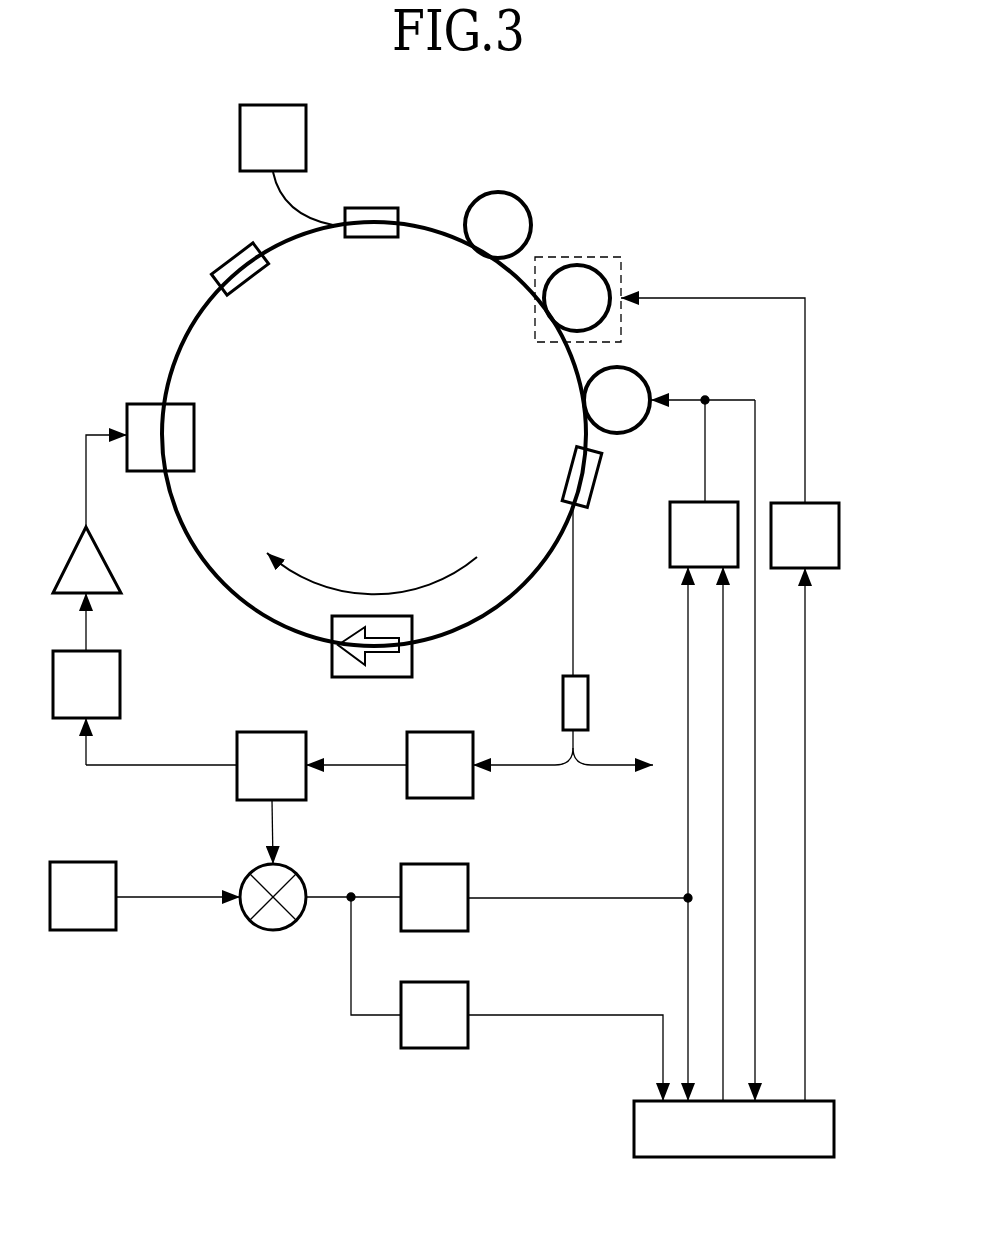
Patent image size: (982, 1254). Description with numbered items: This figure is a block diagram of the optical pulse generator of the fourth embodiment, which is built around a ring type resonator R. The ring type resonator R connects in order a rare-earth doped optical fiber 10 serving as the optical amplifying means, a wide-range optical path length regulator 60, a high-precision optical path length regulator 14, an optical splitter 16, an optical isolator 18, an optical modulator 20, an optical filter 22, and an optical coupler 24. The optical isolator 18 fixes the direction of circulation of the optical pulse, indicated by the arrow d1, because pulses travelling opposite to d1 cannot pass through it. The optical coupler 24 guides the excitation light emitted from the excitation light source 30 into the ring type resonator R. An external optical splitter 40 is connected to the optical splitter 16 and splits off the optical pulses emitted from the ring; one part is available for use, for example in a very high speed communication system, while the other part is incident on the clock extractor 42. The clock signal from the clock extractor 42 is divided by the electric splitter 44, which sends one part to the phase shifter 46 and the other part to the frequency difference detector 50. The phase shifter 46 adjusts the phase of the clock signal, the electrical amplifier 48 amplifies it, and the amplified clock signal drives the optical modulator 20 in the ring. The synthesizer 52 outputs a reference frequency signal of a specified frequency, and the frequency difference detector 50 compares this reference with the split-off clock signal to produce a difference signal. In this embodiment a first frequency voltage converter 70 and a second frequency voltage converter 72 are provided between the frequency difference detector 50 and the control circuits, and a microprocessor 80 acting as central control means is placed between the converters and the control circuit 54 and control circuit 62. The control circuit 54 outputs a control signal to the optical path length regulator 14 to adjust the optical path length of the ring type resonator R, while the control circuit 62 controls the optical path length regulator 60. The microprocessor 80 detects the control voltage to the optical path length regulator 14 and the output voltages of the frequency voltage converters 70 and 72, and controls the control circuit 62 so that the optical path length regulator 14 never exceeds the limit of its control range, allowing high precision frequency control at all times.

The ring type resonator R is at (190, 320).
The direction of circulation d1 is at (372, 576).
The rare-earth doped optical fiber 10 is at (502, 192).
The optical path length regulator 14 is at (647, 417).
The optical splitter 16 is at (565, 482).
The optical isolator 18 is at (332, 660).
The optical modulator 20 is at (194, 440).
The optical filter 22 is at (255, 280).
The optical coupler 24 is at (365, 207).
The excitation light source 30 is at (307, 115).
The optical splitter 40 is at (588, 695).
The clock extractor 42 is at (459, 732).
The electric splitter 44 is at (252, 732).
The phase shifter 46 is at (120, 700).
The electrical amplifier 48 is at (115, 578).
The frequency difference detector 50 is at (302, 877).
The synthesizer 52 is at (113, 862).
The control circuit 54 is at (670, 523).
The optical path length regulator 60 is at (580, 257).
The control circuit 62 is at (820, 568).
The frequency voltage converter 70 is at (468, 870).
The frequency voltage converter 72 is at (468, 990).
The microprocessor 80 is at (634, 1130).